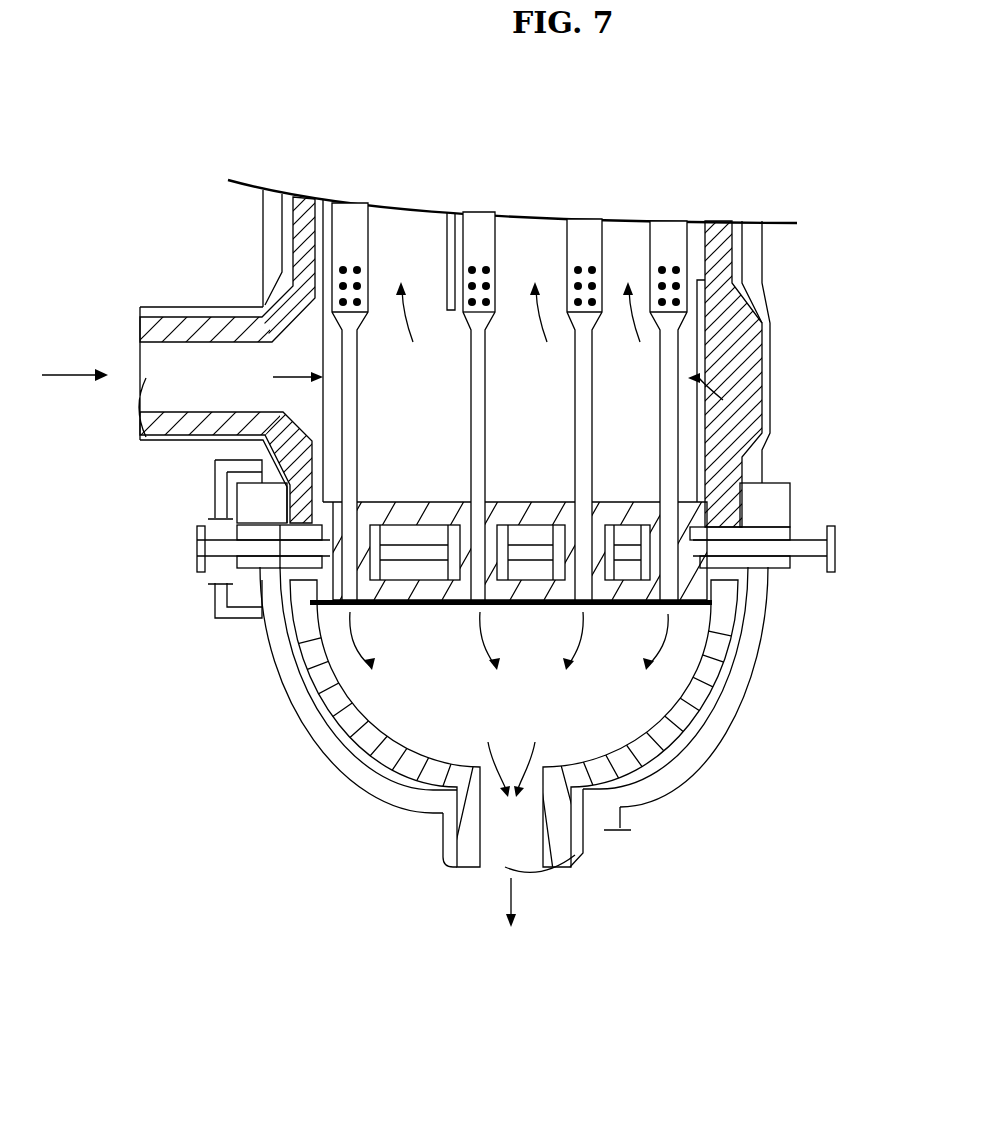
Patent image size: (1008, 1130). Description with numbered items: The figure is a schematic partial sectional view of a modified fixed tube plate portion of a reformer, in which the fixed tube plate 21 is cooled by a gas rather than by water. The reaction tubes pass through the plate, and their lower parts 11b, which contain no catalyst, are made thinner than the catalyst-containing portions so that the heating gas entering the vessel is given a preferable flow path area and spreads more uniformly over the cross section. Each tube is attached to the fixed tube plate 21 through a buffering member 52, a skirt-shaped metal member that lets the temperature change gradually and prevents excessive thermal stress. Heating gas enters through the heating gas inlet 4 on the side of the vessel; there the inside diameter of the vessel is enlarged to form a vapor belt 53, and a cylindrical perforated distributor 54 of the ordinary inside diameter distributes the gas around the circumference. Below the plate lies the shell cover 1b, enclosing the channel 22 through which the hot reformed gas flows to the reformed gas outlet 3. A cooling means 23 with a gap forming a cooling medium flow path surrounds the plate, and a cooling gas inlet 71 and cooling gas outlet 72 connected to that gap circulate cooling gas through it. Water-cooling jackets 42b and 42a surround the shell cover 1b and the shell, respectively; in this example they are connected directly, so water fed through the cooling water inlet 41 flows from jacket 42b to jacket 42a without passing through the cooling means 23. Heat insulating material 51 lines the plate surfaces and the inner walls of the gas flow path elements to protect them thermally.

The shell cover 1b is at (703, 733).
The reformed gas outlet 3 is at (437, 848).
The heating gas inlet 4 is at (143, 312).
The lower part of the reaction tube 11b is at (360, 378).
The fixed tube plate 21 is at (232, 572).
The channel 22 is at (670, 658).
The cooling means 23 is at (710, 548).
The cooling water inlet 41 is at (620, 836).
The water-cooling jacket 42a is at (752, 240).
The water-cooling jacket 42b is at (325, 738).
The heat insulating material 51 is at (412, 602).
The buffering member 52 is at (352, 495).
The vapor belt 53 is at (308, 333).
The distributor 54 is at (317, 403).
The cooling gas inlet 71 is at (190, 528).
The cooling gas outlet 72 is at (832, 528).